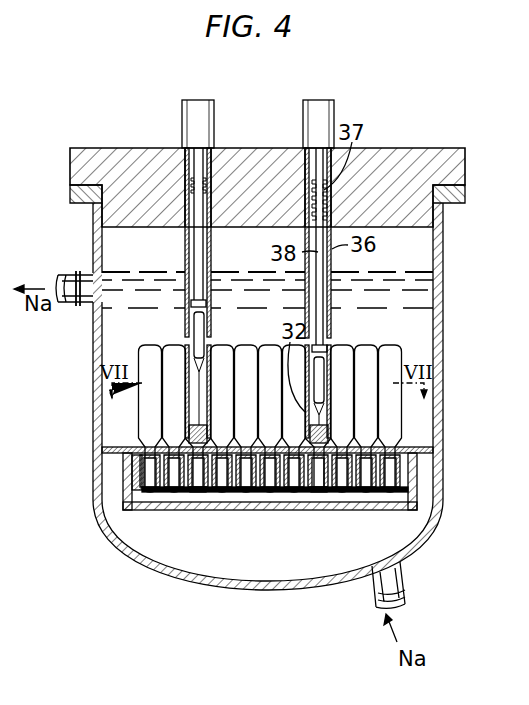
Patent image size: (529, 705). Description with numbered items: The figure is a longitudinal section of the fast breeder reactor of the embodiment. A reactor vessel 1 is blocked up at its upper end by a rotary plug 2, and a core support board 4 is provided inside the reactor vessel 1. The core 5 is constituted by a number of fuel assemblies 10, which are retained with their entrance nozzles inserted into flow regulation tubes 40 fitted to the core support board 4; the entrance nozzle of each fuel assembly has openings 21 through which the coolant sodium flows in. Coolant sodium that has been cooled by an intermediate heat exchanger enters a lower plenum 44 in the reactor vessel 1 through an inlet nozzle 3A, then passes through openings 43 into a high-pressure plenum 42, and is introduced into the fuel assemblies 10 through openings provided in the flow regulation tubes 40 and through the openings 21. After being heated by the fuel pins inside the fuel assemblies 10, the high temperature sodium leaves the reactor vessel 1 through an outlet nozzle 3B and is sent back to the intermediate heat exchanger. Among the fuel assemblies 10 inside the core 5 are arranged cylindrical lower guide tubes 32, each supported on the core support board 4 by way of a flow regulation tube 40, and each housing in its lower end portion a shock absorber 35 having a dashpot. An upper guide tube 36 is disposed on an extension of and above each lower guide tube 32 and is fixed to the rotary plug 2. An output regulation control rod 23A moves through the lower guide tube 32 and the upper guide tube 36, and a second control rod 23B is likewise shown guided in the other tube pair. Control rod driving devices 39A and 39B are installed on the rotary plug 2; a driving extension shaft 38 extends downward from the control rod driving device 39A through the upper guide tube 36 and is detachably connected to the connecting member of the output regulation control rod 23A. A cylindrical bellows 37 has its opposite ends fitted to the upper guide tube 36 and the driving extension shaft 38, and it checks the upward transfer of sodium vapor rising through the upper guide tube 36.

The reactor vessel 1 is at (441, 340).
The rotary plug 2 is at (360, 150).
The inlet nozzle 3A is at (406, 585).
The outlet nozzle 3B is at (72, 303).
The core support board 4 is at (102, 449).
The core 5 is at (141, 352).
The fuel assemblies 10 is at (394, 357).
The openings 21 is at (225, 490).
The output regulation control rod 23A is at (324, 383).
The detector probe B 23B is at (207, 342).
The lower guide tube 32 is at (212, 412).
The shock absorber 35 is at (189, 431).
The upper guide tube 36 is at (212, 249).
The cylindrical bellows 37 is at (193, 188).
The driving extension shaft 38 is at (197, 252).
The control rod driving device 39A is at (313, 100).
The control rod driving device 39B is at (196, 100).
The flow regulation tubes 40 is at (132, 472).
The high-pressure plenum 42 is at (138, 476).
The openings 43 is at (417, 468).
The lower plenum 44 is at (318, 555).